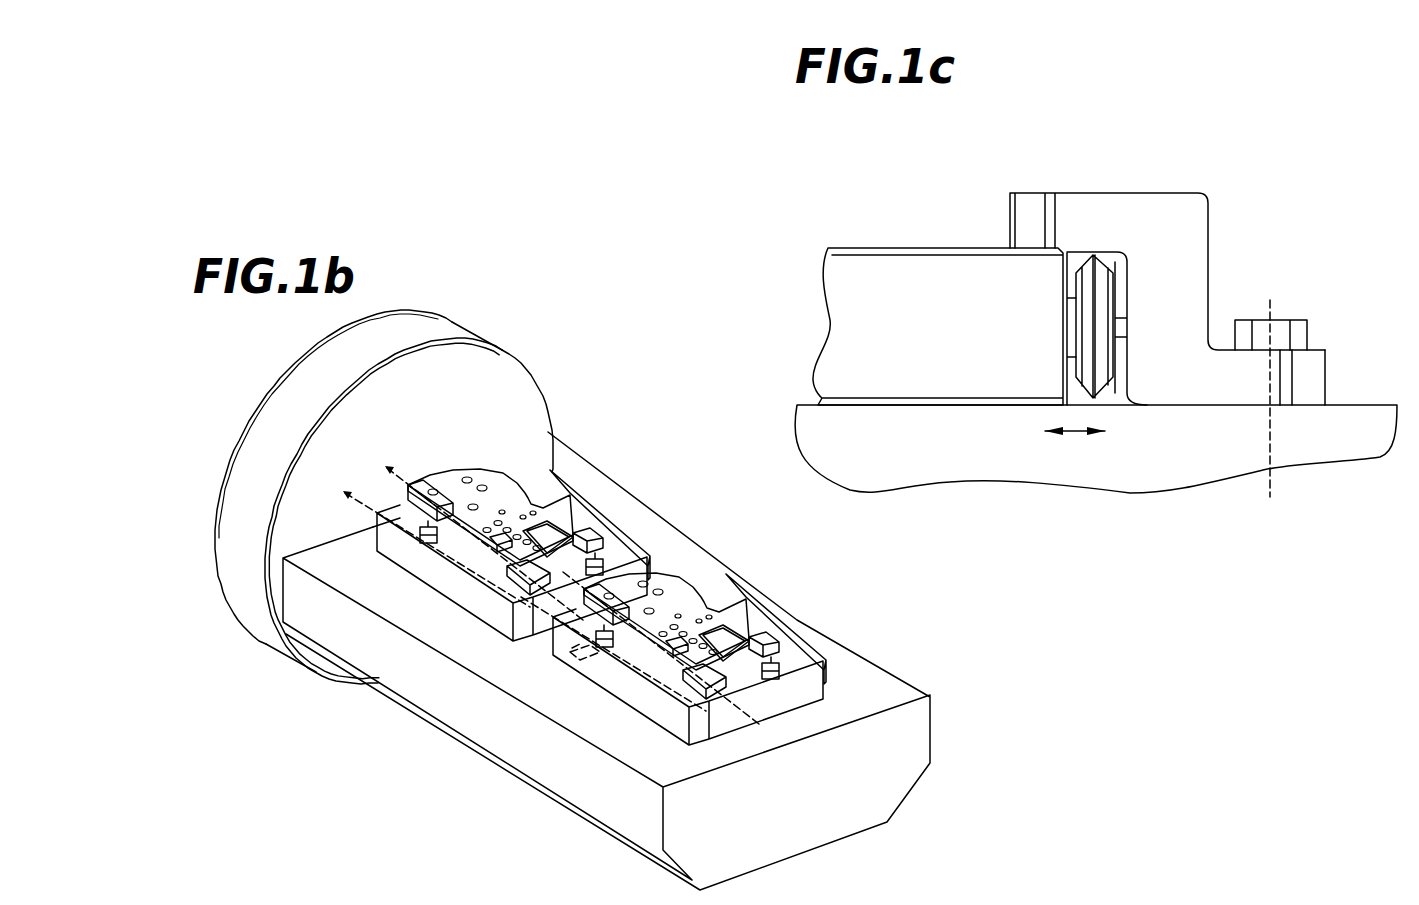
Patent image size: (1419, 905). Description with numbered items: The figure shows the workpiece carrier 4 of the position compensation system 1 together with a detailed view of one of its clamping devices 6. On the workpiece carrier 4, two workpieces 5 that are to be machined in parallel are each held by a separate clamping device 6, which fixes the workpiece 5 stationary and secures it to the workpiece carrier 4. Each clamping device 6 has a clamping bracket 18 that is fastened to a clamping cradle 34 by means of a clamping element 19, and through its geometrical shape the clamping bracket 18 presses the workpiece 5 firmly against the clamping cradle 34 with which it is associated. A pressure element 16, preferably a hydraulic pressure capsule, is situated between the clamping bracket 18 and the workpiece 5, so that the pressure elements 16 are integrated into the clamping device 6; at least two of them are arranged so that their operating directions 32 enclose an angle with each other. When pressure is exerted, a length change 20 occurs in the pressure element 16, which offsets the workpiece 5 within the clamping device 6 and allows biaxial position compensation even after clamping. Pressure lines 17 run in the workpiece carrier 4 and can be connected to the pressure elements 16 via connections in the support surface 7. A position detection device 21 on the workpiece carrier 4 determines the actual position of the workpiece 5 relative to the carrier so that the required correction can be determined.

In FIG. 1B, the position compensation system 1 is at (590, 342).
In FIG. 1B, the workpiece carrier 4 is at (582, 497).
In FIG. 1B, the workpiece 5 is at (513, 503).
In FIG. 1C, the workpiece 5 is at (933, 277).
In FIG. 1B, the clamping device 6 is at (601, 527).
In FIG. 1C, the clamping device 6 is at (1200, 327).
In FIG. 1B, the support surface 7 is at (877, 693).
In FIG. 1C, the pressure element 16 is at (1106, 392).
In FIG. 1B, the pressure line 17 is at (350, 490).
In FIG. 1C, the clamping bracket 18 is at (1168, 210).
In FIG. 1C, the clamping element 19 is at (1297, 338).
In FIG. 1C, the length change 20 is at (1073, 434).
In FIG. 1B, the position detection device 21 is at (613, 733).
In FIG. 1B, the operating direction 32 is at (820, 680).
In FIG. 1B, the clamping cradle 34 is at (402, 552).
In FIG. 1C, the clamping cradle 34 is at (1157, 435).